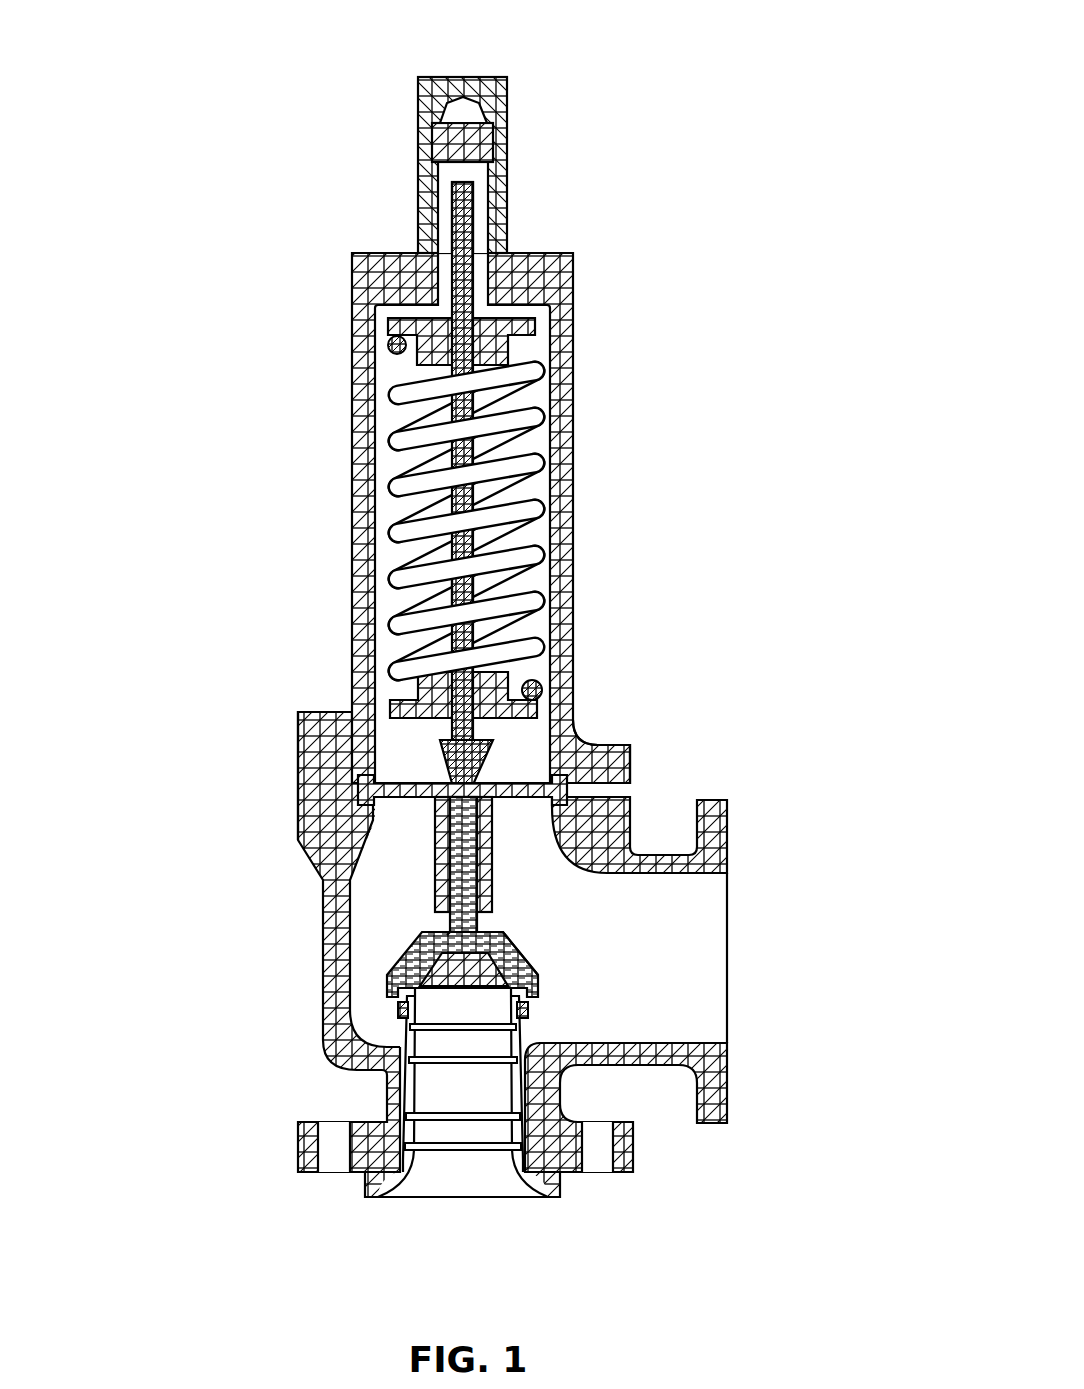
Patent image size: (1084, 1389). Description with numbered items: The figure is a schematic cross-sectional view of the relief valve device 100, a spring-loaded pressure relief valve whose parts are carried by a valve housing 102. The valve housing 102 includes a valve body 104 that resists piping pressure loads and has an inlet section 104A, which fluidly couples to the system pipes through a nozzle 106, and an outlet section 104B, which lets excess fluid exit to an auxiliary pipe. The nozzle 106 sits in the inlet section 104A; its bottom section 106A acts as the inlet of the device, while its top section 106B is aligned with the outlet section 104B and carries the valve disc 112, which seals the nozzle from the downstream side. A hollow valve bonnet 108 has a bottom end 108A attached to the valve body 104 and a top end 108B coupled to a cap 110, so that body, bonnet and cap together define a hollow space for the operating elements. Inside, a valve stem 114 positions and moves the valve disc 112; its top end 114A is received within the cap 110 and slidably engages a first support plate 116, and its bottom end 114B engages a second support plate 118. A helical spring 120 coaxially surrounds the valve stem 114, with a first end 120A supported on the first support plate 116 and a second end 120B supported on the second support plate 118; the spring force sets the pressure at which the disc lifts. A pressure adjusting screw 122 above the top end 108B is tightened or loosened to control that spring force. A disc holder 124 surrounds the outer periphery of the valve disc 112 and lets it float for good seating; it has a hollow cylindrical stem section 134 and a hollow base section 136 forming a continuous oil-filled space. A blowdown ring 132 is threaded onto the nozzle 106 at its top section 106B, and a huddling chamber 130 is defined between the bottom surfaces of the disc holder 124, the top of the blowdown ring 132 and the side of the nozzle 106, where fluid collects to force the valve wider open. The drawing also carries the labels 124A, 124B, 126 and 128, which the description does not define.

The relief valve device 100 is at (497, 643).
The valve housing 102 is at (497, 681).
The valve body 104 is at (584, 958).
The inlet section 104A is at (560, 1183).
The outlet section 104B is at (727, 880).
The nozzle 106 is at (438, 1137).
The bottom section 106A is at (437, 1197).
The top section 106B is at (465, 988).
The valve bonnet 108 is at (493, 538).
The bottom end 108A is at (645, 800).
The top end 108B is at (550, 253).
The cap 110 is at (435, 165).
The valve disc 112 is at (437, 972).
The valve stem 114 is at (461, 484).
The top end 114A is at (458, 212).
The bottom end 114B is at (475, 586).
The first support plate 116 is at (500, 350).
The second support plate 118 is at (400, 693).
The spring 120 is at (461, 484).
The first end 120A is at (395, 340).
The second end 120B is at (538, 680).
The pressure adjusting screw 122 is at (487, 110).
The disc holder 124 is at (518, 969).
The disc upper portion 124A is at (503, 933).
The disc holder sleeve 124B is at (437, 875).
The guide plate 126 is at (397, 783).
The stem tip 128 is at (452, 752).
The huddling chamber 130 is at (523, 987).
The blowdown ring 132 is at (398, 1006).
The hollow cylindrical stem section 134 is at (457, 837).
The hollow base section 136 is at (443, 942).